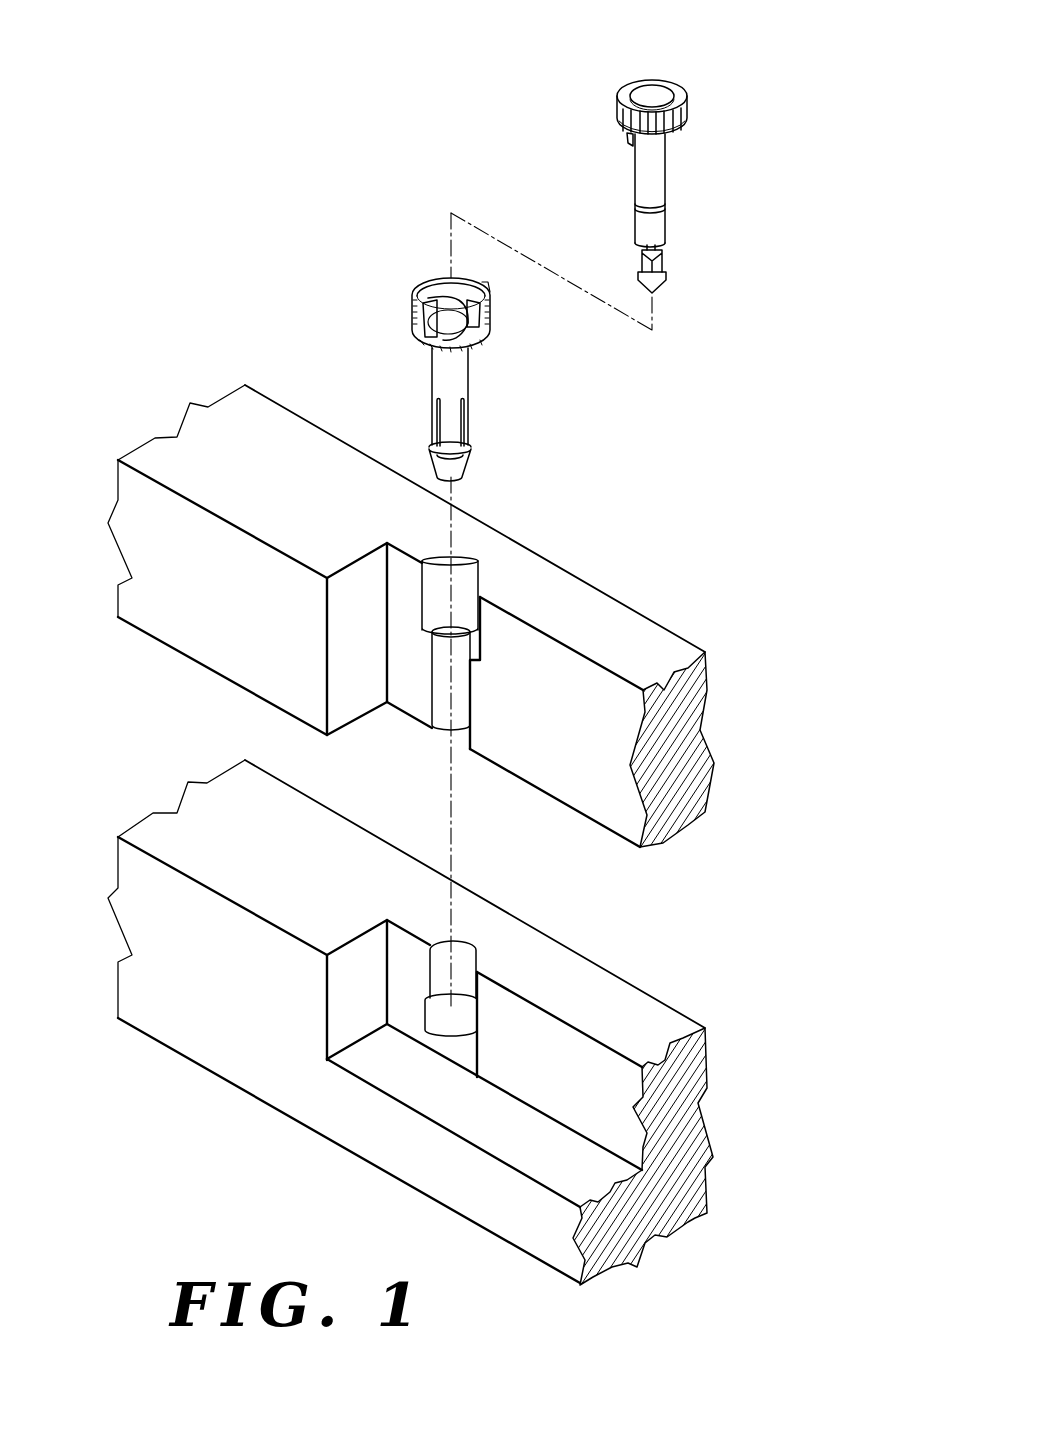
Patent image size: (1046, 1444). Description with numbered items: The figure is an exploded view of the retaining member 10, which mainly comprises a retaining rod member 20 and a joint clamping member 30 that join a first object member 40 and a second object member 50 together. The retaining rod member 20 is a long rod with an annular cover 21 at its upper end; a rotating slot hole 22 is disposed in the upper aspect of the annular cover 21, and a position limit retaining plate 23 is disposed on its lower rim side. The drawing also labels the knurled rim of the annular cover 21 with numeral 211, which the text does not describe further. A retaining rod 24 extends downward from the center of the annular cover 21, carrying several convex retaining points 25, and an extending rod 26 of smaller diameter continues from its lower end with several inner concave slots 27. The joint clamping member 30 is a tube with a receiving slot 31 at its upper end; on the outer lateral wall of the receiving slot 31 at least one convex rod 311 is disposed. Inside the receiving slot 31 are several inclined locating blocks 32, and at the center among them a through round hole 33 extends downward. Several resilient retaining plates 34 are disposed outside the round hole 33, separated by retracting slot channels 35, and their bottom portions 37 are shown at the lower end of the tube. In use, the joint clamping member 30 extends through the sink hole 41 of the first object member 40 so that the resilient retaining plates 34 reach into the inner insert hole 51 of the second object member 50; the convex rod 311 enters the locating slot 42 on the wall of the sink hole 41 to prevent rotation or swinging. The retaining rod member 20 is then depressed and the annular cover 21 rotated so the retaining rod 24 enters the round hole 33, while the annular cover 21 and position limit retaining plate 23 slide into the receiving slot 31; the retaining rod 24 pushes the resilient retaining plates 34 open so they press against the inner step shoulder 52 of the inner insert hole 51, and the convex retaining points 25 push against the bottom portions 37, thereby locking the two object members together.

The retaining member 10 is at (420, 194).
The retaining rod member 20 is at (709, 191).
The annular cover 21 is at (669, 81).
The knurled ridges 211 is at (688, 112).
The rotating slot hole 22 is at (660, 100).
The position limit retaining plate 23 is at (632, 137).
The retaining rod 24 is at (660, 210).
The convex retaining point 25 is at (667, 243).
The extending rod 26 is at (663, 287).
The inner concave slot 27 is at (643, 268).
The joint clamping member 30 is at (522, 340).
The receiving slot 31 is at (434, 299).
The convex rod 311 is at (486, 287).
The inclined locating block 32 is at (486, 342).
The round hole 33 is at (427, 297).
The resilient retaining plate 34 is at (443, 373).
The retracting slot channel 35 is at (466, 427).
The bottom portion 37 is at (460, 477).
The first object member 40 is at (483, 507).
The sink hole 41 is at (442, 597).
The locating slot 42 is at (480, 563).
The second object member 50 is at (504, 1030).
The inner insert hole 51 is at (462, 973).
The inner step shoulder 52 is at (428, 998).